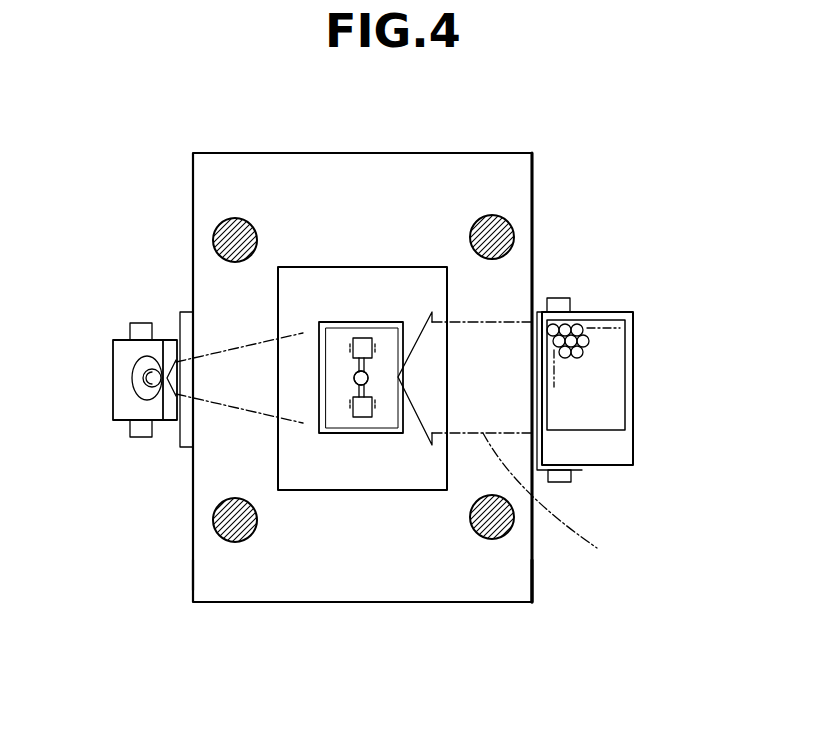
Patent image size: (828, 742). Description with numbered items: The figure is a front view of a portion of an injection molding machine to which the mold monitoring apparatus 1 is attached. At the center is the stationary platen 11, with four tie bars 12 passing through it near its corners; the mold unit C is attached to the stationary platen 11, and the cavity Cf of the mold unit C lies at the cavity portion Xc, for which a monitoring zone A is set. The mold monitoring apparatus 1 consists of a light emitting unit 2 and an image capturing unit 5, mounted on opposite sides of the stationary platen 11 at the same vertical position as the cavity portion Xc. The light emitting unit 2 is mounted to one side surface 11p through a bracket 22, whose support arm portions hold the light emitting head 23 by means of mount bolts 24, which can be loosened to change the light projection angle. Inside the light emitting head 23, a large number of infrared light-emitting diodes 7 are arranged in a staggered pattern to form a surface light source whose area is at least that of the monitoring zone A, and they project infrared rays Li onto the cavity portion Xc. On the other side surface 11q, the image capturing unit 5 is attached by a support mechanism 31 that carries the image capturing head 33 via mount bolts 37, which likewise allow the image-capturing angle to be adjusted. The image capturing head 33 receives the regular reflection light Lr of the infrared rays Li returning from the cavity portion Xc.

The mold monitoring apparatus 1 is at (590, 240).
The light emitting unit 2 is at (643, 351).
The image capturing unit 5 is at (114, 326).
The infrared light-emitting diodes 7 is at (586, 325).
The stationary platen 11 is at (532, 172).
The side surface 11p is at (533, 573).
The side surface 11q is at (193, 573).
The tie bars 12 is at (233, 218).
The bracket 22 is at (528, 357).
The light emitting head 23 is at (635, 437).
The mount bolts 24 is at (573, 479).
The support mechanism 31 is at (198, 332).
The image capturing head 33 is at (113, 387).
The mount bolts 37 is at (142, 322).
The monitoring zone A is at (338, 432).
The mold unit C is at (400, 265).
The cavity Cf is at (363, 415).
The cavity portion Xc is at (355, 318).
The infrared rays Li is at (363, 439).
The regular reflection light Lr is at (253, 410).